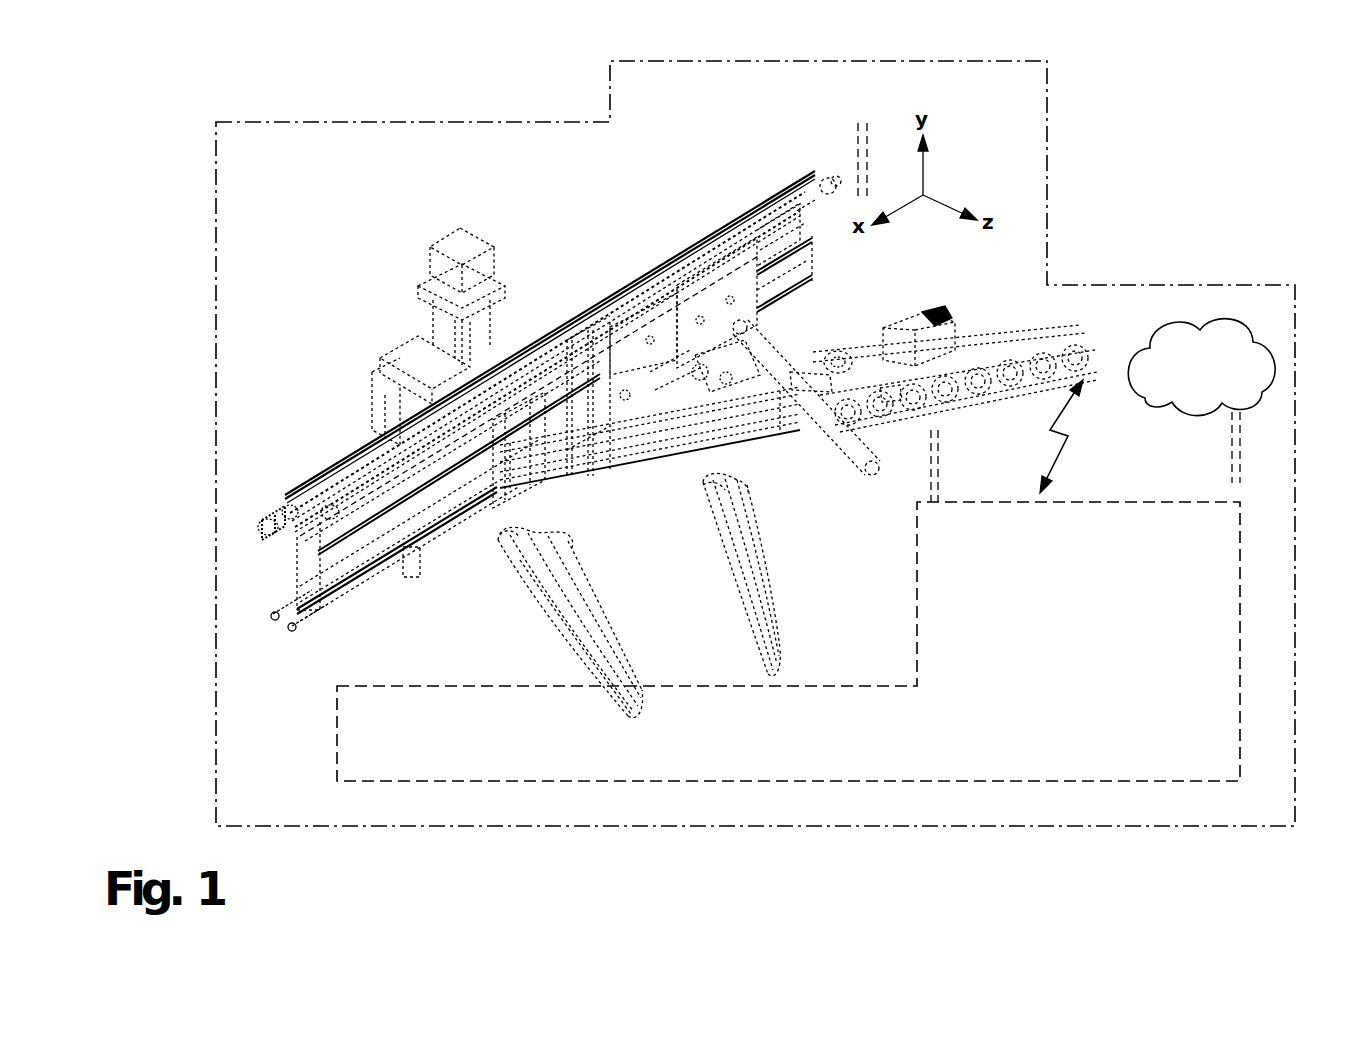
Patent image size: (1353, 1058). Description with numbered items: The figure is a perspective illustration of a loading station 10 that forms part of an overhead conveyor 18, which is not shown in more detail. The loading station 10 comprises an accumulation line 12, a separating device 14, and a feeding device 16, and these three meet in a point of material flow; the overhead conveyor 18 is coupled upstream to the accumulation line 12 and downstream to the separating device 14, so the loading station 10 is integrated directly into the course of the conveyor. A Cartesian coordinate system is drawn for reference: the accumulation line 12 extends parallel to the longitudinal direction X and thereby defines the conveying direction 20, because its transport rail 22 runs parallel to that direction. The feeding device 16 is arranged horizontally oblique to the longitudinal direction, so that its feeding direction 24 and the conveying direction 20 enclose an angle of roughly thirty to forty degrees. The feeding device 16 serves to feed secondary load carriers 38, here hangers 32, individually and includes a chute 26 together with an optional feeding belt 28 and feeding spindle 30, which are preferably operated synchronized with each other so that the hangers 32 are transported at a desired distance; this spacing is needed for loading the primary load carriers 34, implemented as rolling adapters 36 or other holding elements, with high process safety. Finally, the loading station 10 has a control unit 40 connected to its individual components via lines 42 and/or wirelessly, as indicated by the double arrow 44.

The loading station 10 is at (216, 327).
The accumulation line 12 is at (860, 111).
The separating device 14 is at (545, 175).
The feeding device 16 is at (337, 705).
The overhead conveyor 18 is at (1140, 118).
The conveying direction 20 is at (575, 289).
The rail 22 is at (340, 462).
The feeding direction 24 is at (975, 339).
The chute 26 is at (532, 503).
The feeding belt 28 is at (668, 475).
The feeding spindle 30 is at (955, 403).
The hangers 32 is at (750, 630).
The primary load carriers 34 is at (439, 612).
The rolling adapters 36 is at (420, 577).
The secondary load carriers 38 is at (748, 513).
The control unit 40 is at (1214, 383).
The lines 42 is at (1232, 437).
The double arrow 44 is at (1066, 450).